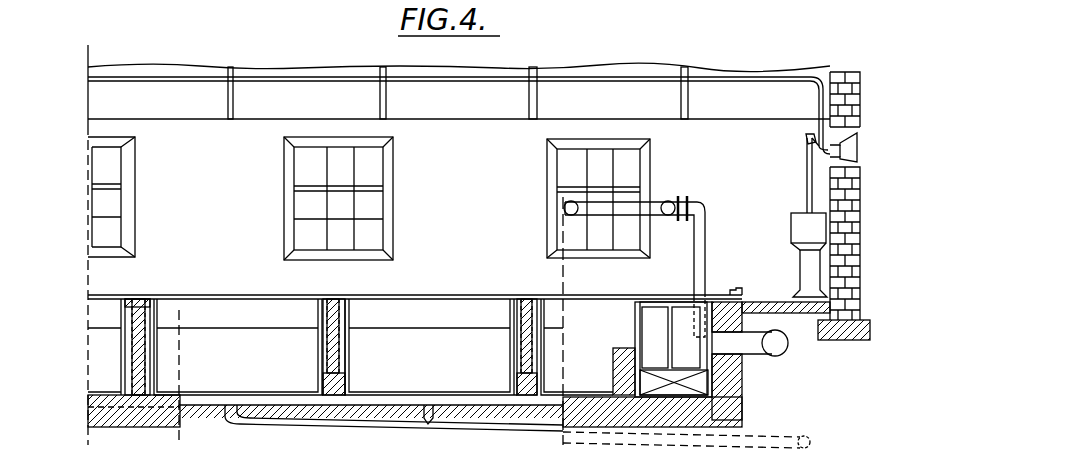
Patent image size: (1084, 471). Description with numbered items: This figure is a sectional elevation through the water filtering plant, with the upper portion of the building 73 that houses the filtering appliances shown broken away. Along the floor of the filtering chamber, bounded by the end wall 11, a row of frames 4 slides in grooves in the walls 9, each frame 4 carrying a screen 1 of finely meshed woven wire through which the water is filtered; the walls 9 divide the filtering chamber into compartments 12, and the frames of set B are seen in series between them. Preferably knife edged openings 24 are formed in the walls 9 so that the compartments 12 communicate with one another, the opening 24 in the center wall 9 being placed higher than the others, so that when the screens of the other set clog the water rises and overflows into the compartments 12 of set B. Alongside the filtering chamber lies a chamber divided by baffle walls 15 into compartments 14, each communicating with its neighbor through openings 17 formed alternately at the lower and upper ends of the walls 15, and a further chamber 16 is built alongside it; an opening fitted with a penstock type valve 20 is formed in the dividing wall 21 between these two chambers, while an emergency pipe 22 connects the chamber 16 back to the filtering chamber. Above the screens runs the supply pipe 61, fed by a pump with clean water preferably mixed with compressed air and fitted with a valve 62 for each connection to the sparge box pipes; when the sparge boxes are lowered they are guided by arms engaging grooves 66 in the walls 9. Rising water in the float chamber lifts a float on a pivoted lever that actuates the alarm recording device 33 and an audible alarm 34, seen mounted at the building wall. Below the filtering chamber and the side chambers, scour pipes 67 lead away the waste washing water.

The screen 1 is at (350, 347).
The frame 4 is at (150, 375).
The wall 9 is at (140, 352).
The end wall 11 is at (725, 341).
The compartment 12 is at (376, 322).
The compartment 14 is at (640, 349).
The baffle wall 15 is at (622, 366).
The chamber 16 is at (613, 319).
The opening 17 is at (623, 341).
The valve 20 is at (698, 381).
The dividing wall 21 is at (579, 319).
The emergency pipe 22 is at (750, 361).
The opening 24 is at (138, 324).
The alarm recording device 33 is at (808, 231).
The audible alarm 34 is at (828, 152).
The supply pipe 61 is at (602, 216).
The valve 62 is at (571, 201).
The groove 66 is at (345, 313).
The scour pipe 67 is at (340, 427).
The building 73 is at (812, 272).
The set of filters B is at (340, 321).